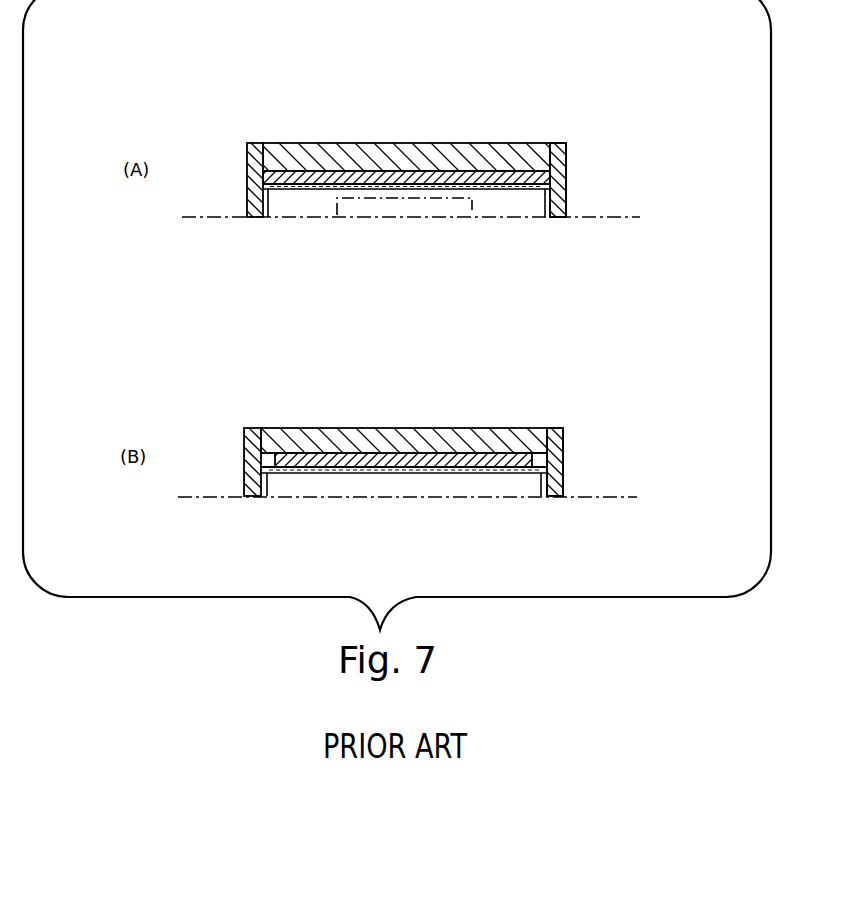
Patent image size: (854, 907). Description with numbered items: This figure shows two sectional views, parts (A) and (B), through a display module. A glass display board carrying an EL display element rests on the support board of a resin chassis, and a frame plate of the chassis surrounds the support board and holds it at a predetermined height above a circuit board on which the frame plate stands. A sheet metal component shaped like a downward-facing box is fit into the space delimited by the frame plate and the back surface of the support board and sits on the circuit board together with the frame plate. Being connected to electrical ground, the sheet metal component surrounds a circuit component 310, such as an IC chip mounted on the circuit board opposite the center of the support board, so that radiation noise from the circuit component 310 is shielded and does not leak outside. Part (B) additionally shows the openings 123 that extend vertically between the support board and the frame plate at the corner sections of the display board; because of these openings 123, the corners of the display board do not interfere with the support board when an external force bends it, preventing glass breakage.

The openings 123 is at (270, 456).
The circuit component 310 is at (383, 197).